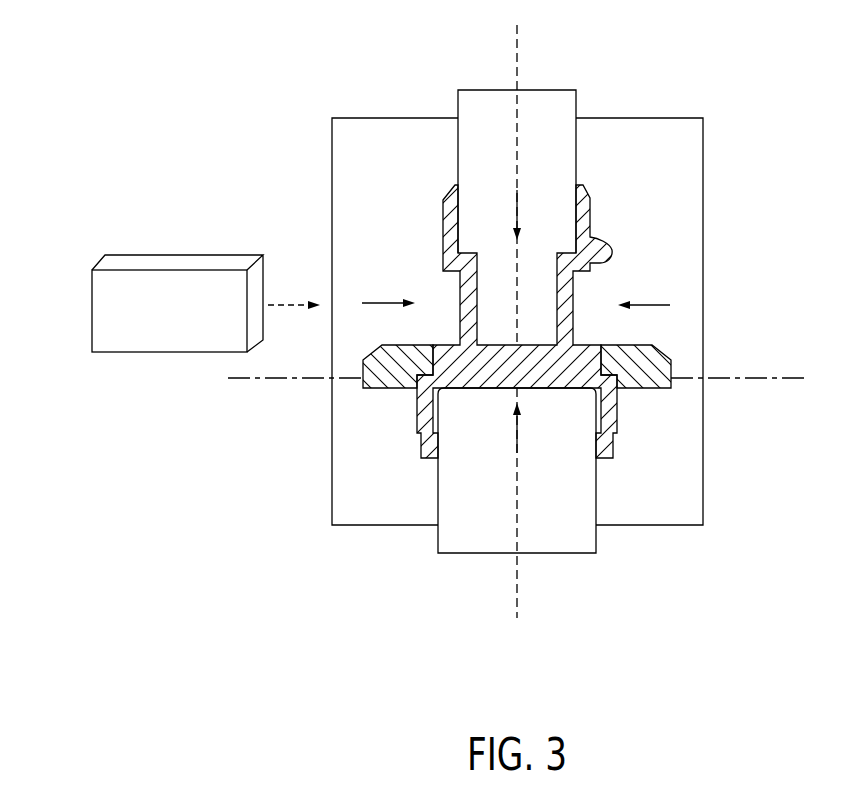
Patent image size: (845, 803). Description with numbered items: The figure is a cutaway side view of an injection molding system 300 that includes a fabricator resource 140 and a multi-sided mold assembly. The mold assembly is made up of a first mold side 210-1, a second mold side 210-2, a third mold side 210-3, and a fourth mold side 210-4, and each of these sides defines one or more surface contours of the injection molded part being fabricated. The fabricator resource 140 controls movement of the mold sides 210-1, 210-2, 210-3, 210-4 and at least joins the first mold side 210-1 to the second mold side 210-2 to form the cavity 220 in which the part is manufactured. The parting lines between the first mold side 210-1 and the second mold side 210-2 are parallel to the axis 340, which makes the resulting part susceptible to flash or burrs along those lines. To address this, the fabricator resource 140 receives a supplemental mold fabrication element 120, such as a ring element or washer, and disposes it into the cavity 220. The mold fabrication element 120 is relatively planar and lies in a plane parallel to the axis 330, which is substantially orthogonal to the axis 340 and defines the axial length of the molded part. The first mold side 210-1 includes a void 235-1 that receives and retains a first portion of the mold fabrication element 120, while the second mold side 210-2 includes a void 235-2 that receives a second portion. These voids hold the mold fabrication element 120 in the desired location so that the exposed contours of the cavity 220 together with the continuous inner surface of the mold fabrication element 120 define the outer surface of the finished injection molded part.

The injection molding system 300 is at (212, 189).
The fabricator resource 140 is at (92, 310).
The first mold side 210-1 is at (416, 174).
The second mold side 210-2 is at (658, 174).
The third mold side 210-3 is at (538, 174).
The fourth mold side 210-4 is at (538, 491).
The cavity 220 is at (574, 305).
The supplemental mold fabrication element 120 is at (555, 321).
The void 235-1 is at (393, 390).
The void 235-2 is at (641, 390).
The axis 330 is at (743, 382).
The axis 340 is at (519, 590).